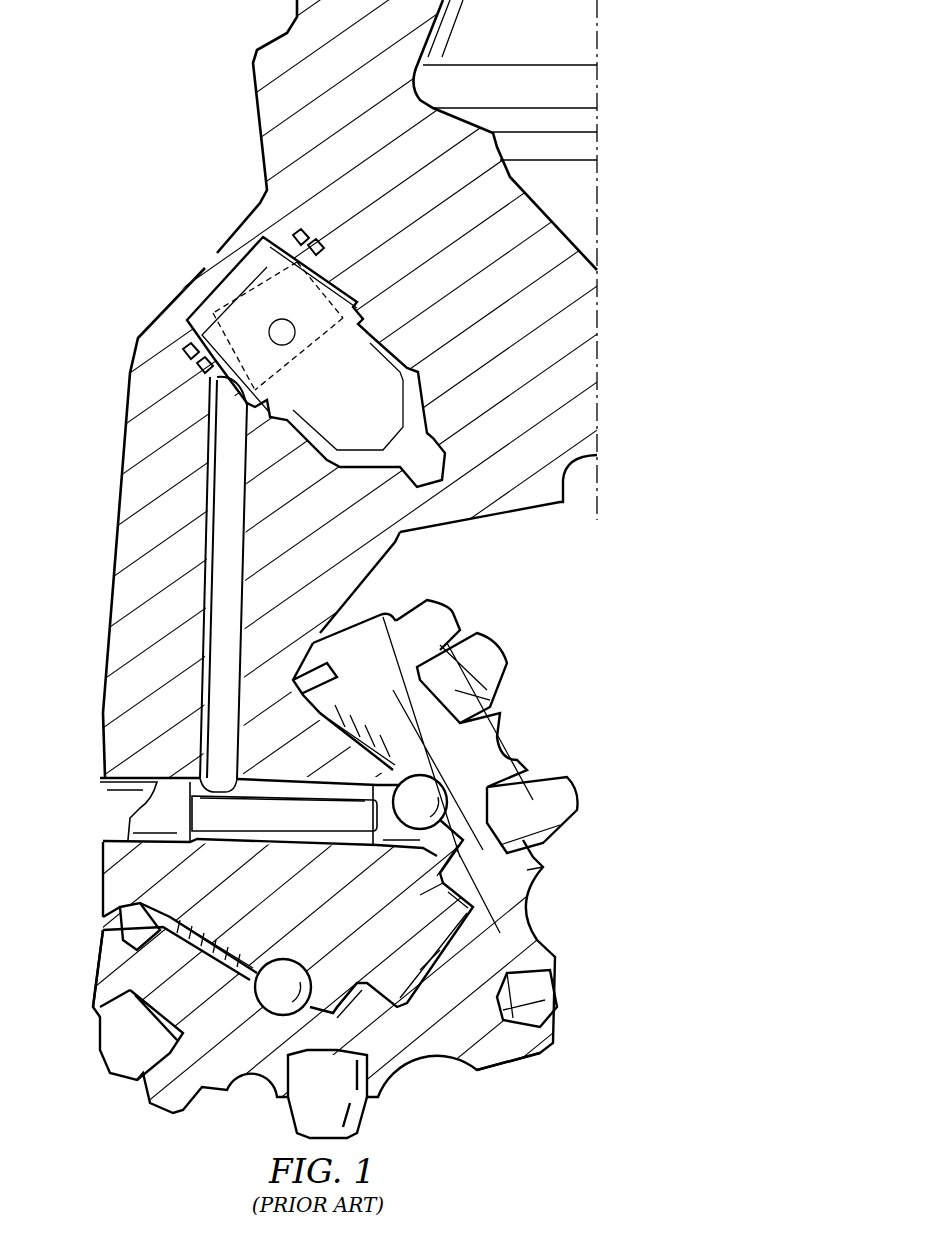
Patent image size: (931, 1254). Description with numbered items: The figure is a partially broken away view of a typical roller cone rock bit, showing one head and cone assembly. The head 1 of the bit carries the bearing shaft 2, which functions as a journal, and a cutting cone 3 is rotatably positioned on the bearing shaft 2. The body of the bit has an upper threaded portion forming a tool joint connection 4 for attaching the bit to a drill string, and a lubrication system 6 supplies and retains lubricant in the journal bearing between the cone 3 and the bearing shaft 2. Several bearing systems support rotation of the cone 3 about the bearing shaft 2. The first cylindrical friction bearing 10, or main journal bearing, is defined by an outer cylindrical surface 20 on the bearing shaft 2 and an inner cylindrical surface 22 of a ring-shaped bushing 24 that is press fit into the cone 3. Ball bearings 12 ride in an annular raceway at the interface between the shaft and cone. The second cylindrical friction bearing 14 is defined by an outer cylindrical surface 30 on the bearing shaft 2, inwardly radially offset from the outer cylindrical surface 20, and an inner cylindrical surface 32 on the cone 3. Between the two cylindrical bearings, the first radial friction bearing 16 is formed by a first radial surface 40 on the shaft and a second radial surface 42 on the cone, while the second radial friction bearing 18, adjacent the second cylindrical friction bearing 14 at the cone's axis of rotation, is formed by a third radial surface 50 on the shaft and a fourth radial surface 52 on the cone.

The head 1 is at (70, 380).
The bearing shaft 2 is at (304, 904).
The cutting cone 3 is at (496, 1070).
The tool joint connection 4 is at (276, 106).
The lubrication system 6 is at (212, 263).
The first cylindrical friction bearing 10 is at (354, 712).
The ball bearings 12 is at (413, 767).
The second cylindrical friction bearing 14 is at (462, 878).
The first radial friction (thrust) bearing 16 is at (485, 848).
The second radial friction (thrust) bearing 18 is at (460, 955).
The outer cylindrical surface 20 is at (237, 940).
The inner cylindrical surface 22 is at (183, 947).
The bushing 24 is at (193, 963).
The outer cylindrical surface 30 is at (440, 898).
The inner cylindrical surface 32 is at (527, 905).
The first radial surface 40 is at (338, 997).
The second radial surface 42 is at (350, 997).
The third radial surface 50 is at (410, 980).
The fourth radial surface 52 is at (433, 963).